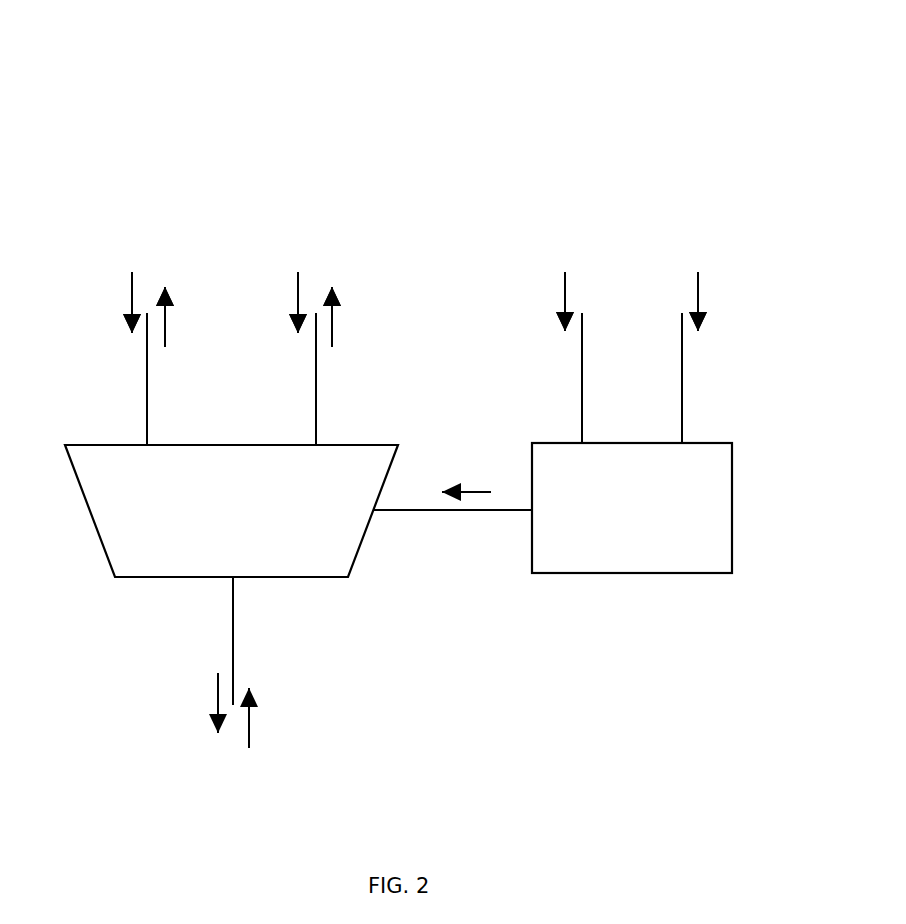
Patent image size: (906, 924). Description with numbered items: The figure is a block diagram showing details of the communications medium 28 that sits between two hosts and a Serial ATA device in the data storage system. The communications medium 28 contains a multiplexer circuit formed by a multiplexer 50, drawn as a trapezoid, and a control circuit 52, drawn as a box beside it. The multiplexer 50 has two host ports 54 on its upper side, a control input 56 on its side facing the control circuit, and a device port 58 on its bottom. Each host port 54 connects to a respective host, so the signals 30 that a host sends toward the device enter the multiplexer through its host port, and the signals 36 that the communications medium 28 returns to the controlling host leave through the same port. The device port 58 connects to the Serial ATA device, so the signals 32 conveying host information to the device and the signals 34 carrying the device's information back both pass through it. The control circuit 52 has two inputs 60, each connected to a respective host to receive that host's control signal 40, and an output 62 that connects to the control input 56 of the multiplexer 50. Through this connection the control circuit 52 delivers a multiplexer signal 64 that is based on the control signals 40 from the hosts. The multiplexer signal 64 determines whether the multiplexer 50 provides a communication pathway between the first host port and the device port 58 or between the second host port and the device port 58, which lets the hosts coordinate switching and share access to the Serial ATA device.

The communications medium 28 is at (68, 91).
The signals 30 is at (68, 259).
The signals 32 is at (217, 713).
The signals 34 is at (248, 715).
The signals 36 is at (366, 262).
The control signals 40 is at (610, 255).
The multiplexer 50 is at (248, 519).
The control circuit 52 is at (648, 525).
The host ports 54 is at (102, 398).
The control input 56 is at (388, 511).
The device port 58 is at (234, 593).
The inputs 60 is at (478, 371).
The output 62 is at (515, 511).
The multiplexer signal 64 is at (465, 490).